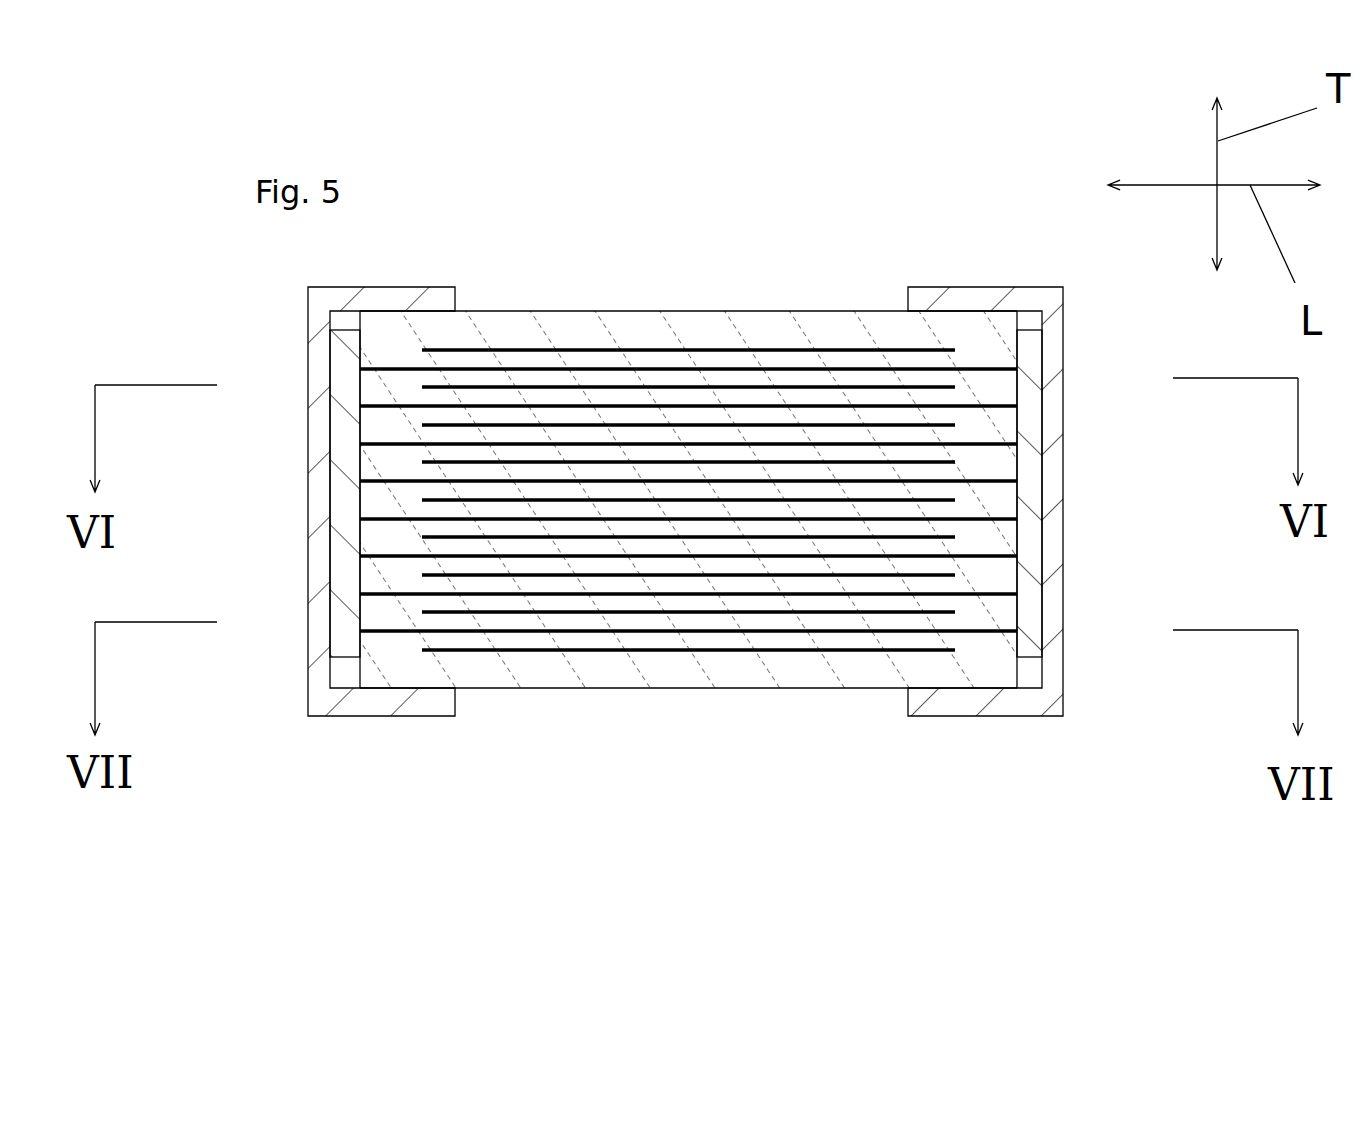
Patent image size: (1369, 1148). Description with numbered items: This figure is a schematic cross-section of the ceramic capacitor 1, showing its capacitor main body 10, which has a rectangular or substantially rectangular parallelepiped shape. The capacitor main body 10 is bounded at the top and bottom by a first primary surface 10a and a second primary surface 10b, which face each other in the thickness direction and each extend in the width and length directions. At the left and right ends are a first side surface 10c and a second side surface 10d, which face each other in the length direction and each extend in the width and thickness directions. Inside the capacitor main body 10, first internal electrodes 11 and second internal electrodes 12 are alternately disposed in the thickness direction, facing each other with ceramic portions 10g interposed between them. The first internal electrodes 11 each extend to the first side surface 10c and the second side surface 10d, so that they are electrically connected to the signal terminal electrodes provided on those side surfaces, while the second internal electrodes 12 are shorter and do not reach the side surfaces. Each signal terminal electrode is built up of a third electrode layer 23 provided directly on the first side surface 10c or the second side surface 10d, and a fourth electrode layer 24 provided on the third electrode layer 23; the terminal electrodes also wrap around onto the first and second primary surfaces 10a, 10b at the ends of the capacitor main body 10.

The ceramic capacitor 1 is at (930, 239).
The capacitor main body 10 is at (722, 295).
The first primary surface 10a is at (568, 308).
The second primary surface 10b is at (603, 688).
The first side surface 10c is at (353, 583).
The second side surface 10d is at (1018, 562).
The ceramic portion 10g is at (703, 618).
The first internal electrode 11 is at (527, 630).
The second internal electrode 12 is at (857, 650).
The third electrode layer 23 is at (1042, 395).
The fourth electrode layer 24 is at (1063, 495).